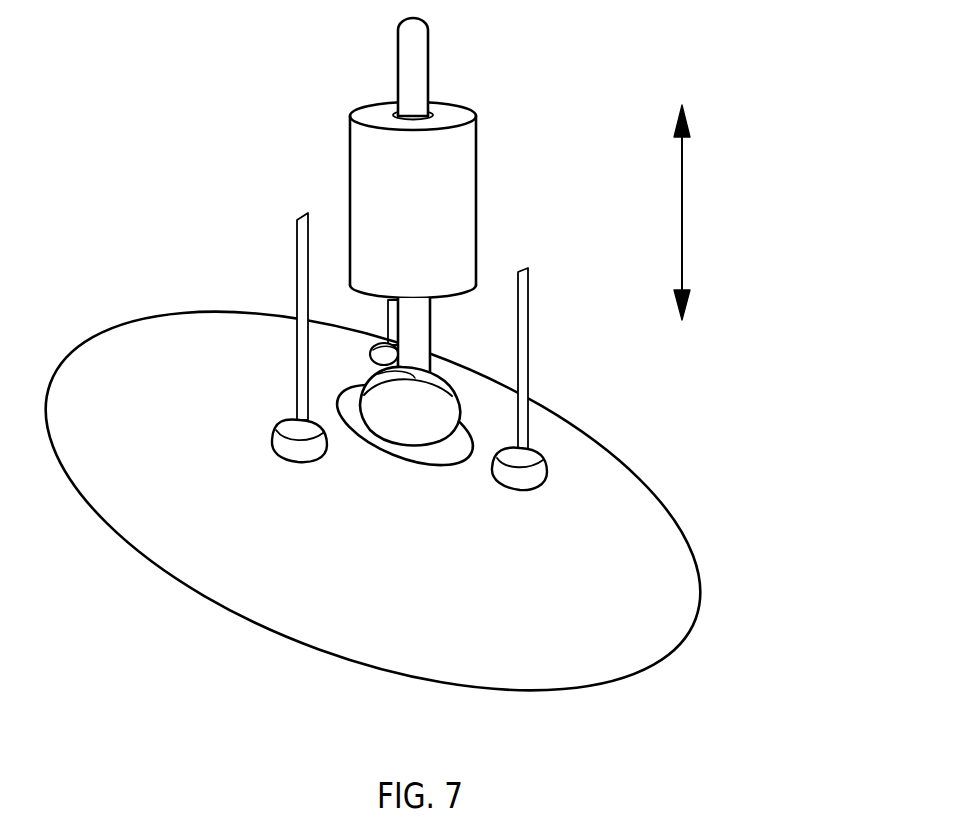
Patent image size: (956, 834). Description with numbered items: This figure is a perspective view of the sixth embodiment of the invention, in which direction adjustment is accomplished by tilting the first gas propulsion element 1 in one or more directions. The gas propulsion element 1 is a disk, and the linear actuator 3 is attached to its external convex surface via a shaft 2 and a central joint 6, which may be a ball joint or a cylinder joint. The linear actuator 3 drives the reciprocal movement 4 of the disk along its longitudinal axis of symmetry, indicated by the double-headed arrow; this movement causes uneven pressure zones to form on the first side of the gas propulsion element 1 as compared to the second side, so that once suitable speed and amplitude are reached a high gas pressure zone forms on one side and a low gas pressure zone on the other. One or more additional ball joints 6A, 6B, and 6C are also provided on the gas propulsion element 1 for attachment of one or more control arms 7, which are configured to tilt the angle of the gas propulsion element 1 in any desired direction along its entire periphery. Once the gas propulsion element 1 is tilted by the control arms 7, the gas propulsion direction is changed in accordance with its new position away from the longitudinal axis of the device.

The gas propulsion element 1 is at (647, 563).
The shaft 2 is at (415, 77).
The linear actuator 3 is at (375, 165).
The reciprocal movement 4 is at (682, 223).
The central joint 6 is at (423, 417).
The additional ball joint 6A is at (272, 442).
The additional ball joint 6B is at (370, 357).
The additional ball joint 6C is at (530, 475).
The control arm 7 is at (300, 245).